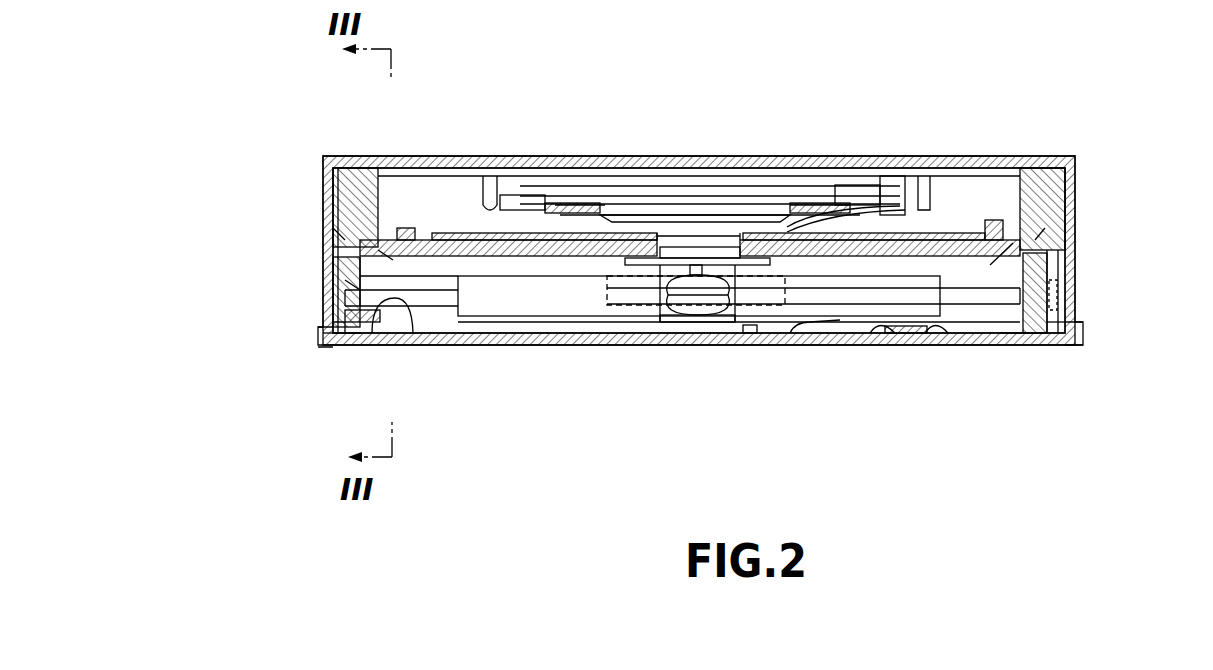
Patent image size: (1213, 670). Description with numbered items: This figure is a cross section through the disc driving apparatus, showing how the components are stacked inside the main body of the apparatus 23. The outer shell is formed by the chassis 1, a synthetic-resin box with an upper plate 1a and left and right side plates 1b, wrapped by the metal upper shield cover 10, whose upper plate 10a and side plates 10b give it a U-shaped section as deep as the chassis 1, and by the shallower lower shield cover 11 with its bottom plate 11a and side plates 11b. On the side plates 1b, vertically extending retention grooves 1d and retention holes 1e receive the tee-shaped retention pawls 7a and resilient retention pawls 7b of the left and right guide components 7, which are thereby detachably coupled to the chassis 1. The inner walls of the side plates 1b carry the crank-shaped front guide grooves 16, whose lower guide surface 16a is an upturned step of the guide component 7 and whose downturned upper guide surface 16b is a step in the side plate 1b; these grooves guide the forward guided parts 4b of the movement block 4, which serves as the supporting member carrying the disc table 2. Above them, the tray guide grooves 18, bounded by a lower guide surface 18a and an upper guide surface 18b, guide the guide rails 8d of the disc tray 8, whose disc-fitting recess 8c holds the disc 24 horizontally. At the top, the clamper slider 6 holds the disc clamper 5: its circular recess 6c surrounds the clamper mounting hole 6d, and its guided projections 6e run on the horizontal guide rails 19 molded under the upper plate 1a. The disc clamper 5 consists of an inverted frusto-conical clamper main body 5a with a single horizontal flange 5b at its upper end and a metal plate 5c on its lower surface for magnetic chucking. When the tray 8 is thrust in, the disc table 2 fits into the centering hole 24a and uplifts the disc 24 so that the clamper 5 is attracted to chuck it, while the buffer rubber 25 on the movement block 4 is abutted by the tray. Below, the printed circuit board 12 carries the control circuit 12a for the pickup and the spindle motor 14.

The chassis 1 is at (337, 160).
The upper plate 1a is at (556, 170).
The side plates 1b is at (330, 185).
The retention grooves 1d is at (1062, 287).
The retention holes 1e is at (323, 340).
The disc table 2 is at (774, 262).
The movement block 4 is at (568, 300).
The forward guided parts 4b is at (345, 300).
The disc clamper 5 is at (757, 187).
The clamper main body 5a is at (738, 195).
The flange 5b is at (597, 185).
The metal plate 5c is at (823, 186).
The clamper slider 6 is at (962, 183).
The circular recess 6c is at (870, 176).
The clamper mounting hole 6d is at (988, 180).
The guided projections 6e is at (529, 182).
The guide components 7 is at (386, 346).
The tee-shaped retention pawls 7a is at (1042, 342).
The resilient retention pawls 7b is at (345, 347).
The disc tray 8 is at (517, 257).
The disc-fitting recess 8c is at (432, 228).
The guide rails 8d is at (335, 240).
The upper shield cover 10 is at (718, 205).
The upper plate 10a is at (698, 178).
The side plates 10b is at (1077, 346).
The lower shield cover 11 is at (797, 333).
The bottom plate 11a is at (833, 346).
The side plates 11b is at (332, 337).
The printed circuit board 12 is at (968, 342).
The control circuit 12a is at (868, 337).
The spindle motor 14 is at (612, 333).
The front guide grooves 16 is at (345, 320).
The lower guide surface 16a is at (387, 300).
The upper guide surface 16b is at (340, 283).
The tray guide grooves 18 is at (335, 250).
The lower guide surface 18a is at (695, 264).
The upper guide surface 18b is at (335, 228).
The guide rails 19 is at (487, 180).
The main body of the disc driving apparatus 23 is at (1070, 148).
The disc 24 is at (456, 236).
The centering hole 24a is at (657, 236).
The buffer rubber 25 is at (697, 283).